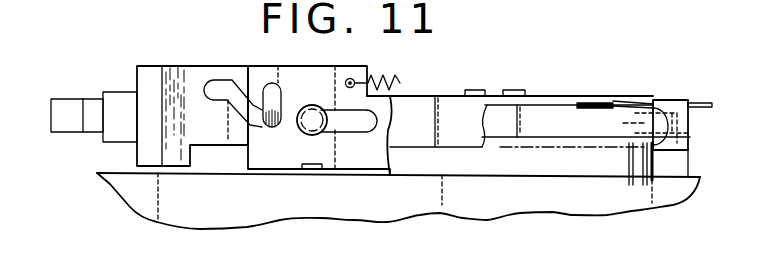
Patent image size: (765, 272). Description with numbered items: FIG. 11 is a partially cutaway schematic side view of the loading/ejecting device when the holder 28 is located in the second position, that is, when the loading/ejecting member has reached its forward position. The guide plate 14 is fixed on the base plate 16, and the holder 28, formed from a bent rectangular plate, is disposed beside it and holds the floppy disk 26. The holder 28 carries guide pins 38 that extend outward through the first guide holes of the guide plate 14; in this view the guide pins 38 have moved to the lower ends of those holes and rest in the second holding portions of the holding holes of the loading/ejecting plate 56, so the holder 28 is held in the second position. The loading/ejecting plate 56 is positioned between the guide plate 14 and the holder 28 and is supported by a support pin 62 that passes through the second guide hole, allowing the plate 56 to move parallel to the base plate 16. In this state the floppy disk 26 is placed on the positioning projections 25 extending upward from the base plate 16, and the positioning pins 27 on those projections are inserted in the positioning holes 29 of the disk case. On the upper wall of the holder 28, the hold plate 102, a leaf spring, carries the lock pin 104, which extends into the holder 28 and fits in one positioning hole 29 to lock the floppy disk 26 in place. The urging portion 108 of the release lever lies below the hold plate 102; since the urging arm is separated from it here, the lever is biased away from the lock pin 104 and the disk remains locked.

The guide plate 14 is at (303, 77).
The base plate 16 is at (545, 203).
The positioning projection 25 is at (654, 168).
The floppy disk 26 is at (536, 138).
The positioning pin 27 is at (618, 144).
The holder 28 is at (122, 96).
The positioning hole 29 is at (688, 136).
The guide pin 38 is at (273, 129).
The loading/ejecting plate 56 is at (193, 77).
The support pin 62 is at (323, 133).
The hold plate 102 is at (548, 97).
The lock pin 104 is at (633, 118).
The urging portion 108 is at (588, 103).